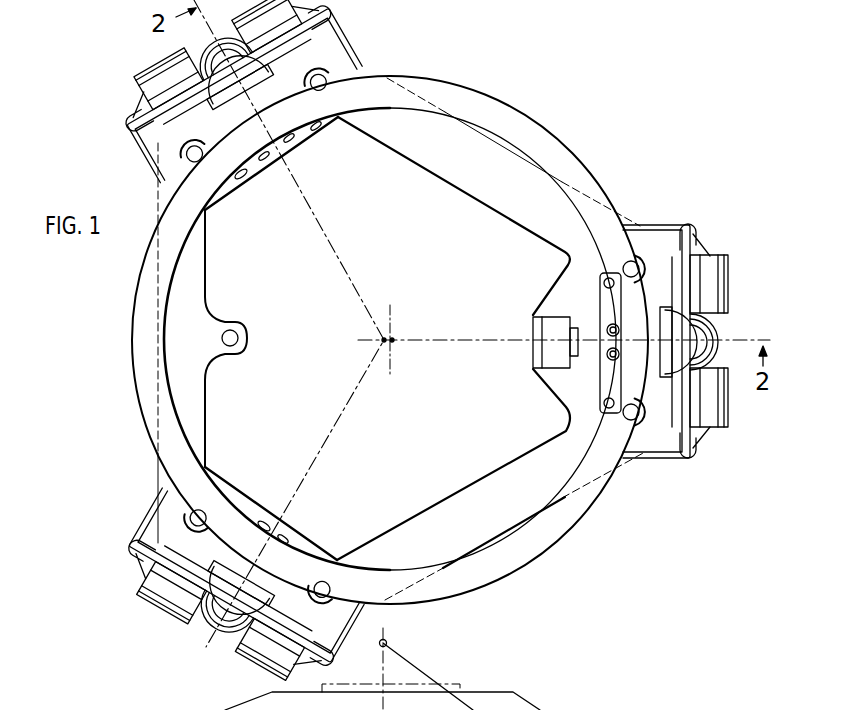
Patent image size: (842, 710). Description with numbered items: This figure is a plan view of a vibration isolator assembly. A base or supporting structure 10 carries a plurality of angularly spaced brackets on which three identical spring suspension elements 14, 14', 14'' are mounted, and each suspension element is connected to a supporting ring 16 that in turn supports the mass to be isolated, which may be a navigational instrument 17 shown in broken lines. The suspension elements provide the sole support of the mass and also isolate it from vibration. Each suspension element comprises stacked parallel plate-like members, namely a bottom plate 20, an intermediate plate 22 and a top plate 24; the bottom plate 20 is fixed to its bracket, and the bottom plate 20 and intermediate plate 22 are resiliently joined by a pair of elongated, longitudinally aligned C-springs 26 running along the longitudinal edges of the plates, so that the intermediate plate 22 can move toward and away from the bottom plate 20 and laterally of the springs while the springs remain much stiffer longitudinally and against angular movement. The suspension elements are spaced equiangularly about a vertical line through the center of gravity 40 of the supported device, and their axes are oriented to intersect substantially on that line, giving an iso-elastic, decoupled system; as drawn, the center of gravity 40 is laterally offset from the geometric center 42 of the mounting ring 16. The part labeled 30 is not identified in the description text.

The base or supporting structure 10 is at (497, 208).
The spring suspension element 14 is at (685, 325).
The spring suspension element 14' is at (218, 91).
The spring suspension element 14'' is at (211, 592).
The supporting ring 16 is at (543, 131).
The navigational instrument 17 is at (492, 692).
The bottom plate 20 is at (728, 289).
The intermediate plate 22 is at (713, 422).
The top plate 24 is at (672, 410).
The C-spring 26 is at (712, 256).
The mounting plate 30 is at (673, 208).
The center of gravity 40 is at (382, 342).
The geometric center of the mounting ring 42 is at (397, 333).